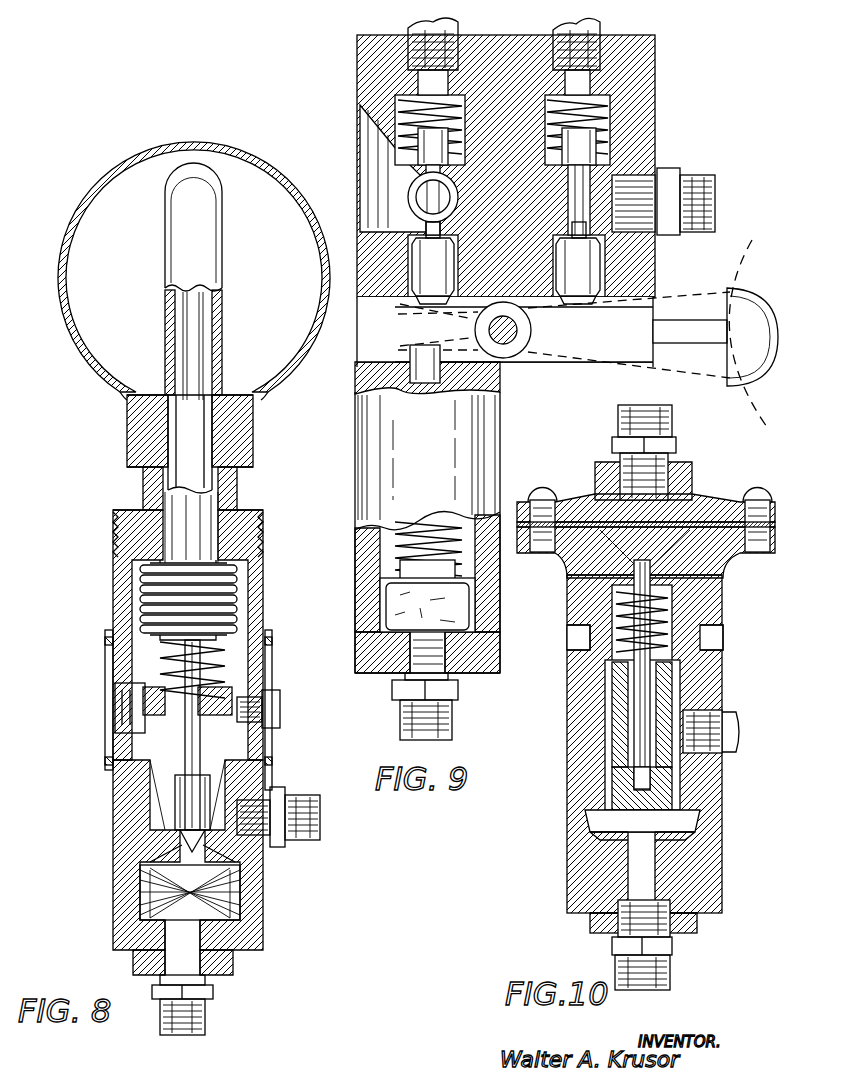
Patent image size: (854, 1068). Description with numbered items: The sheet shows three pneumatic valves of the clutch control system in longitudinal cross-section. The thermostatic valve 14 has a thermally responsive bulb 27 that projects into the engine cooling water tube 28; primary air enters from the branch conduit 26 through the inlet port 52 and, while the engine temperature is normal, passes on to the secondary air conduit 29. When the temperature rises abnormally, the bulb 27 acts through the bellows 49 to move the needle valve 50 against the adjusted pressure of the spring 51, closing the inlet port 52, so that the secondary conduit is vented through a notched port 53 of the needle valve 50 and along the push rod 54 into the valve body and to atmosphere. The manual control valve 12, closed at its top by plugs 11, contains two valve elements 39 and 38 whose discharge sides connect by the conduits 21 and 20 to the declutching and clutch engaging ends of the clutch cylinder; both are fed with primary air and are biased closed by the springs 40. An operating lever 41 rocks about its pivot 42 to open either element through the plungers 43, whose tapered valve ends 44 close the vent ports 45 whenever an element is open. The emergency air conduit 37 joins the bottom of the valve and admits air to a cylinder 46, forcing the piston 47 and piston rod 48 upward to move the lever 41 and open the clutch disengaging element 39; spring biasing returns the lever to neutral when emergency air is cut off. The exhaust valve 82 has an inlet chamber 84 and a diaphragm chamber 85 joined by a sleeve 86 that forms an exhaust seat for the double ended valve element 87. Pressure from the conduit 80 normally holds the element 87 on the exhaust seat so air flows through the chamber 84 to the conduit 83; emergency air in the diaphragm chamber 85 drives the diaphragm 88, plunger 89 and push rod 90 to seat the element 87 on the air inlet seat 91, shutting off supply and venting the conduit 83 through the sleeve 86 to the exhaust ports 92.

In FIG. 9, the threaded plug 11 is at (556, 25).
In FIG. 9, the manual control valve 12 is at (356, 462).
In FIG. 8, the thermostatic valve 14 is at (113, 555).
In FIG. 9, the conduit 20 is at (697, 172).
In FIG. 9, the conduit 21 is at (412, 186).
In FIG. 8, the branch conduit 26 is at (212, 1018).
In FIG. 8, the thermally responsive bulb 27 is at (176, 222).
In FIG. 8, the cooling water tube 28 is at (74, 330).
In FIG. 8, the secondary air conduit 29 is at (304, 838).
In FIG. 9, the emergency air conduit 37 is at (400, 706).
In FIG. 10, the emergency air conduit 37 is at (673, 424).
In FIG. 9, the valve element 38 is at (600, 148).
In FIG. 9, the valve element 39 is at (420, 150).
In FIG. 9, the spring 40 is at (397, 100).
In FIG. 9, the operating lever 41 is at (688, 340).
In FIG. 9, the pivot 42 is at (512, 346).
In FIG. 9, the plunger 43 is at (416, 302).
In FIG. 9, the tapered valve end 44 is at (408, 282).
In FIG. 9, the vent port 45 is at (418, 232).
In FIG. 9, the cylinder 46 is at (382, 566).
In FIG. 9, the piston 47 is at (392, 607).
In FIG. 9, the piston rod 48 is at (425, 370).
In FIG. 8, the bellows 49 is at (150, 600).
In FIG. 8, the needle valve 50 is at (180, 835).
In FIG. 8, the spring 51 is at (158, 660).
In FIG. 8, the inlet port 52 is at (145, 862).
In FIG. 8, the notched port 53 is at (200, 800).
In FIG. 8, the push rod 54 is at (196, 748).
In FIG. 10, the conduit 80 is at (612, 946).
In FIG. 10, the exhaust valve 82 is at (571, 758).
In FIG. 10, the conduit 83 is at (726, 722).
In FIG. 10, the inlet chamber 84 is at (594, 830).
In FIG. 10, the diaphragm chamber 85 is at (692, 522).
In FIG. 10, the sleeve 86 is at (620, 674).
In FIG. 10, the double ended valve element 87 is at (614, 786).
In FIG. 10, the diaphragm 88 is at (680, 516).
In FIG. 10, the plunger 89 is at (612, 546).
In FIG. 10, the push rod 90 is at (638, 612).
In FIG. 10, the air inlet seat 91 is at (592, 845).
In FIG. 10, the exhaust port 92 is at (580, 639).